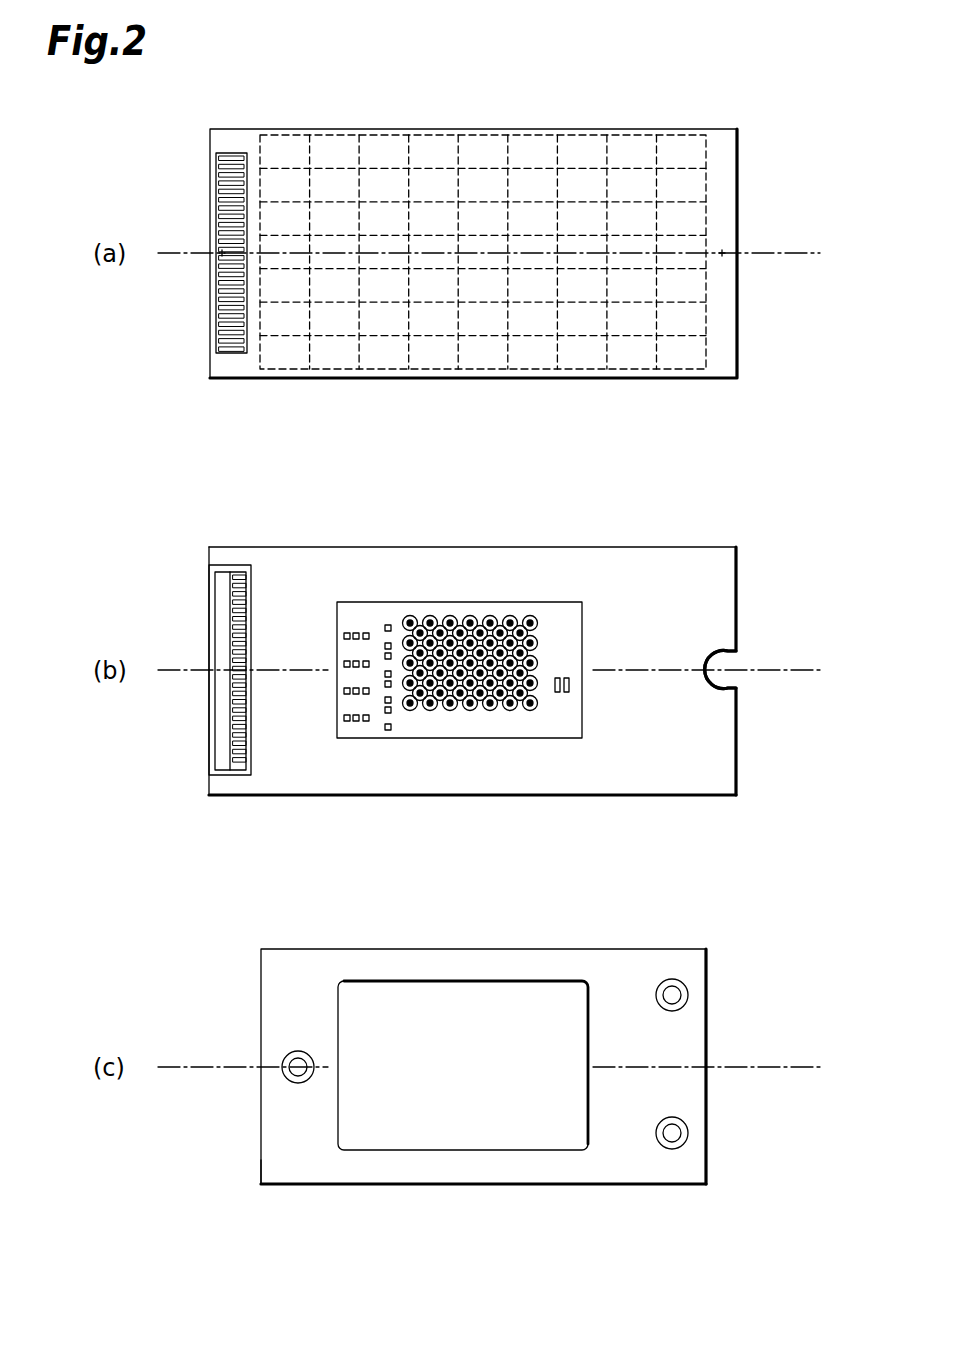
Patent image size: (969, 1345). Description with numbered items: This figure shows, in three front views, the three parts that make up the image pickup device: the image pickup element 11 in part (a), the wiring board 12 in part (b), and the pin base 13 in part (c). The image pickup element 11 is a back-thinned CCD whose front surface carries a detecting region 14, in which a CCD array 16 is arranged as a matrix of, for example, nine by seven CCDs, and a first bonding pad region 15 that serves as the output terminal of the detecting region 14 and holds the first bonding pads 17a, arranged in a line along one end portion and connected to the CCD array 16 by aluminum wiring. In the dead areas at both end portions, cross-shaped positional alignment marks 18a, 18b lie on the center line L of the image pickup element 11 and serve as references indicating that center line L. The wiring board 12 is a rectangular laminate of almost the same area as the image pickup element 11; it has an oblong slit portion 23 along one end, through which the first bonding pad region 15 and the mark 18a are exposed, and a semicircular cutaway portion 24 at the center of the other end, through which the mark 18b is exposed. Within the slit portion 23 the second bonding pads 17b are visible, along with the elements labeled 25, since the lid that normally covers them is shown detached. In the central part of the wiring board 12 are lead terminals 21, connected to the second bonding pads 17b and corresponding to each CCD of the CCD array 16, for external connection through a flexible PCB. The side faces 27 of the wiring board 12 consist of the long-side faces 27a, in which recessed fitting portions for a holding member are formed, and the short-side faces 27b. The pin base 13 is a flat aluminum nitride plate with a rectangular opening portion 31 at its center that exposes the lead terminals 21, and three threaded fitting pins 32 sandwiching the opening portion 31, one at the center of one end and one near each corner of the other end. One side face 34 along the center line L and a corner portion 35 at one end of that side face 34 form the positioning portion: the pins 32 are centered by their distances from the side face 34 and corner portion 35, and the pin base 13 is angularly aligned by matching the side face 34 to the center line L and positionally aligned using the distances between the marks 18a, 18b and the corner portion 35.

The image pickup element 11 is at (737, 130).
The wiring board 12 is at (478, 660).
The pin base 13 is at (663, 963).
The detecting region 14 is at (712, 196).
The first bonding pad region 15 is at (217, 166).
The CCD array 16 is at (578, 157).
The first bonding pad 17a is at (231, 182).
The second bonding pad 17b is at (238, 749).
The positional alignment mark 18a is at (224, 253).
The positional alignment mark 18b is at (723, 257).
The lead terminal 21 is at (473, 617).
The slit portion 23 is at (209, 590).
The cutaway portion 24 is at (741, 688).
The connector terminals 25 is at (240, 574).
The side face 27 is at (478, 660).
The side face at the long side 27a is at (357, 547).
The side face at the short side 27b is at (208, 767).
The opening portion 31 is at (537, 992).
The threaded fitting pin 32 is at (298, 1062).
The side face 34 is at (492, 1185).
The corner portion 35 is at (261, 1186).
The center line L is at (777, 256).